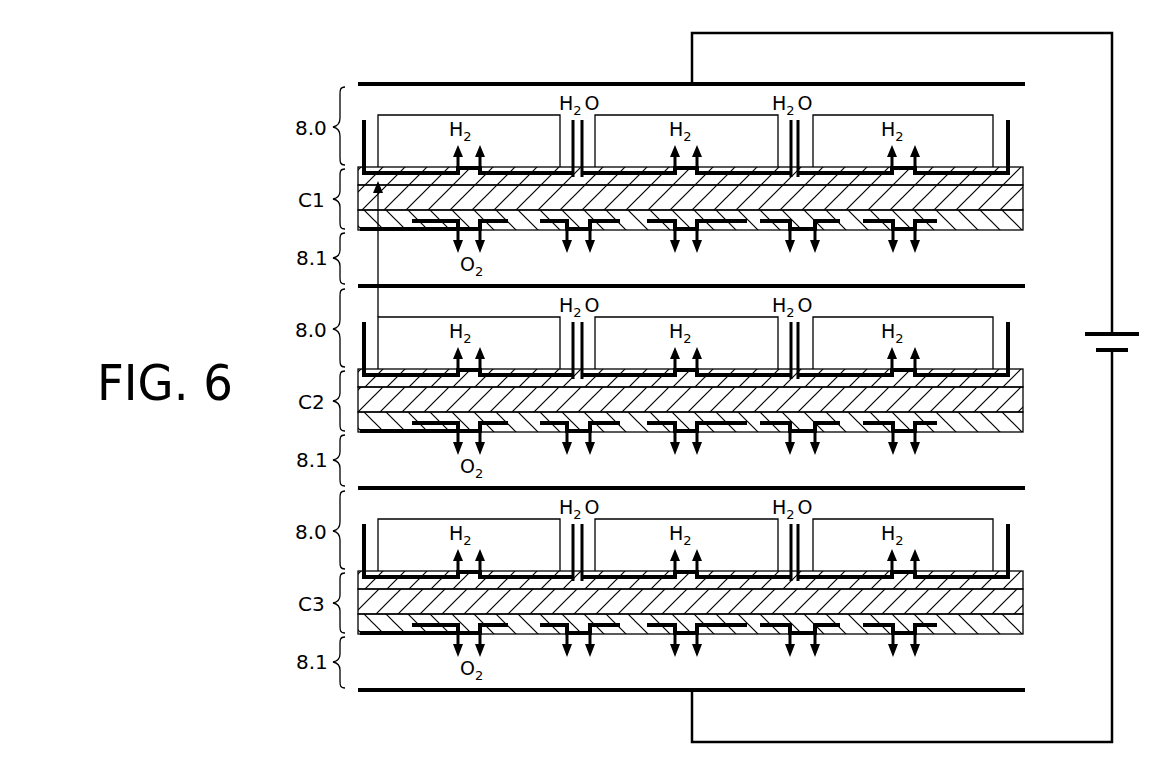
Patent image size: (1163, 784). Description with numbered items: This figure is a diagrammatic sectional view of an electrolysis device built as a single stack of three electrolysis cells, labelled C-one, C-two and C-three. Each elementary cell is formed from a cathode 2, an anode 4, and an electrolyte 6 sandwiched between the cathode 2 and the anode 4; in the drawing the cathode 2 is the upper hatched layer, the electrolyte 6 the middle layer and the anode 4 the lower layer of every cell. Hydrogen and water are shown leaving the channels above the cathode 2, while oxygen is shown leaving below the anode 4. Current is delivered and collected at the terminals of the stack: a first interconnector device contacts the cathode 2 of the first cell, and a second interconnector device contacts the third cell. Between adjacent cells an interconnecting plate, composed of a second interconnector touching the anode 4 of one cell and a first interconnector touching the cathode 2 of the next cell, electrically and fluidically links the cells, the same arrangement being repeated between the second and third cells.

The cathode 2 is at (1022, 170).
The electrolyte 6 is at (1022, 201).
The anode 4 is at (1022, 223).